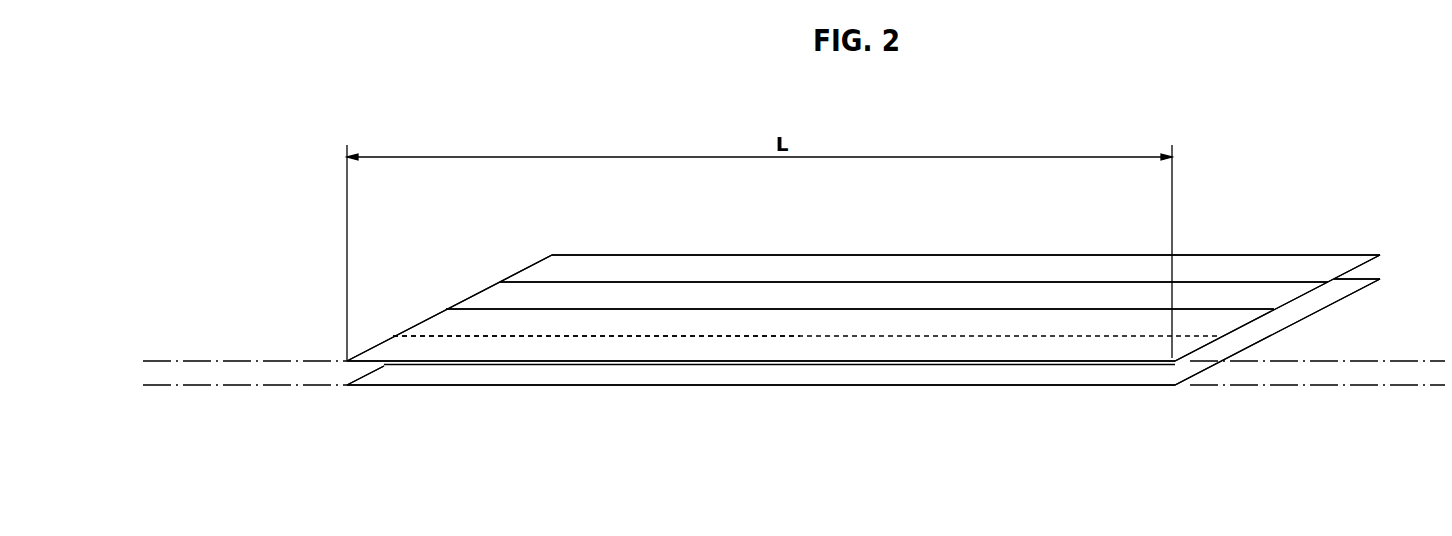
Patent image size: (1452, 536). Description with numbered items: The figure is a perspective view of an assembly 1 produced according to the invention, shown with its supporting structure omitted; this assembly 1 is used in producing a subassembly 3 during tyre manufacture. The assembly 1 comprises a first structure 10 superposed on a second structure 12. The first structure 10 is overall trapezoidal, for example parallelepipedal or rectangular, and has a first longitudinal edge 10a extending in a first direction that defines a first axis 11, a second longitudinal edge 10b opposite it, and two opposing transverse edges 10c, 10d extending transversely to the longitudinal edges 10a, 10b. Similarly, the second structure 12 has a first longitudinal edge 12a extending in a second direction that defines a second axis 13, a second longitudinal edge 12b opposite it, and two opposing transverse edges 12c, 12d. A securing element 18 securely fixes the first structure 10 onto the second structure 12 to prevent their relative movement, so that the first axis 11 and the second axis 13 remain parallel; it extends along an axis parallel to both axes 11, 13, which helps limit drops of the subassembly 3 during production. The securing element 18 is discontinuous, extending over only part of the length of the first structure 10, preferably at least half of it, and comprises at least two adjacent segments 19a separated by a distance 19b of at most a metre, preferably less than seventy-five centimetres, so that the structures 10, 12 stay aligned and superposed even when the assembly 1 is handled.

The assembly 1 is at (1087, 102).
The subassembly 3 is at (1011, 343).
The first structure 10 is at (812, 353).
The first longitudinal edge 10a is at (708, 362).
The second longitudinal edge 10b is at (1318, 254).
The transverse edge 10c is at (381, 343).
The transverse edge 10d is at (1306, 296).
The first axis 11 is at (211, 361).
The second structure 12 is at (842, 376).
The first longitudinal edge 12a is at (748, 386).
The second longitudinal edge 12b is at (1363, 278).
The transverse edge 12c is at (365, 367).
The transverse edge 12d is at (1290, 325).
The second axis 13 is at (211, 386).
The securing element 18 is at (777, 331).
The segments 19a is at (639, 333).
The distance 19b is at (558, 333).